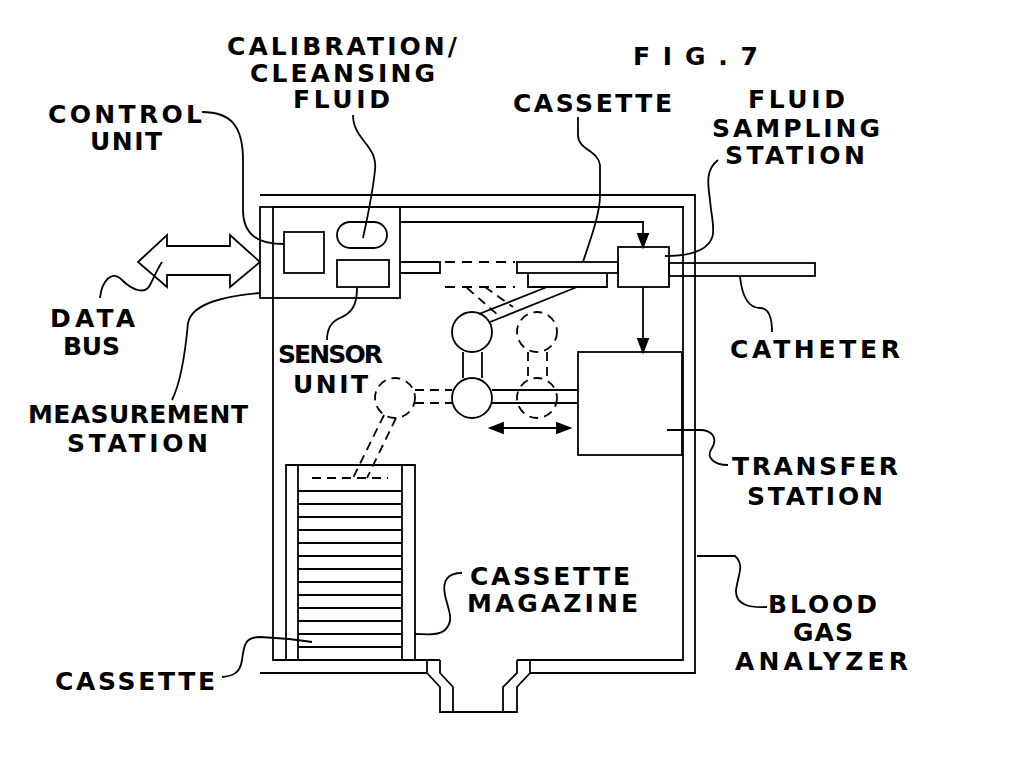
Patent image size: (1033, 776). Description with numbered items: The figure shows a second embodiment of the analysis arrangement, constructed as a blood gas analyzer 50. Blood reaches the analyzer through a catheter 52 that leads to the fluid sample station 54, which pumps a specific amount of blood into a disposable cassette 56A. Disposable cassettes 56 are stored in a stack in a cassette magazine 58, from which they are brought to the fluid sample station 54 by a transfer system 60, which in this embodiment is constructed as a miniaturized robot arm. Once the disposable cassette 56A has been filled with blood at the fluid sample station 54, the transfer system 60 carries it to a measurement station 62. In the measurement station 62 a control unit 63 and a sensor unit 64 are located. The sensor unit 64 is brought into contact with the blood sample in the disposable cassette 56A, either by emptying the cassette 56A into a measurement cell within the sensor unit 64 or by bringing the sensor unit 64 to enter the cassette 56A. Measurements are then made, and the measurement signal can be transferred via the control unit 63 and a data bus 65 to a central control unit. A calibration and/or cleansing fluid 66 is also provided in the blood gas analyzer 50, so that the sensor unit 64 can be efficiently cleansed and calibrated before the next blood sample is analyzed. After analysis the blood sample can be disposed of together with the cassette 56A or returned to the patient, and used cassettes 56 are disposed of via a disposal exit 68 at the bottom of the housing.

The blood gas analyzer 50 is at (335, 195).
The catheter 52 is at (755, 263).
The fluid sample station 54 is at (534, 287).
The disposable cassettes 56 is at (300, 517).
The disposable cassette 56A is at (540, 262).
The cassette magazine 58 is at (287, 593).
The transfer system 60 is at (497, 382).
The measurement station 62 is at (297, 300).
The control unit 63 is at (304, 252).
The sensor unit 64 is at (380, 288).
The data bus 65 is at (197, 245).
The calibration and/or cleansing fluid 66 is at (370, 238).
The disposal exit 68 is at (518, 697).